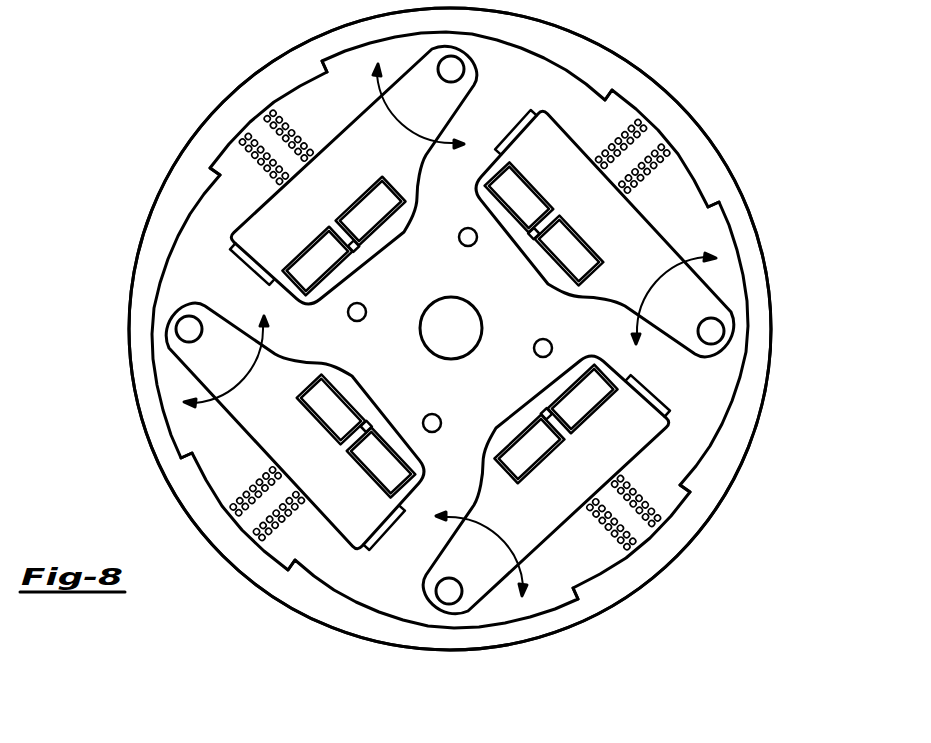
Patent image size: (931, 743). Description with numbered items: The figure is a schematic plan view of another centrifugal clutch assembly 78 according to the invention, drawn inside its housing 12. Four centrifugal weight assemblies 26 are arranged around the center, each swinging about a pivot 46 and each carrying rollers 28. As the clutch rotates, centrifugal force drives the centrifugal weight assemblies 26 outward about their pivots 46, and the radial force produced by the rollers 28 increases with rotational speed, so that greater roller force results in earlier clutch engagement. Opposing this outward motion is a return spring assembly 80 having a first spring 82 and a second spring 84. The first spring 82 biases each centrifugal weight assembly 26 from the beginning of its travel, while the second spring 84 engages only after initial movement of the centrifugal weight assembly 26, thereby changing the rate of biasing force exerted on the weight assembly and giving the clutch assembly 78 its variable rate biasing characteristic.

The housing 12 is at (589, 46).
The centrifugal weight assembly 26 is at (355, 182).
The rollers 28 is at (328, 258).
The pivot 46 is at (457, 74).
The clutch assembly 78 is at (190, 635).
The return spring assembly 80 is at (307, 110).
The first spring 82 is at (254, 170).
The second spring 84 is at (265, 126).